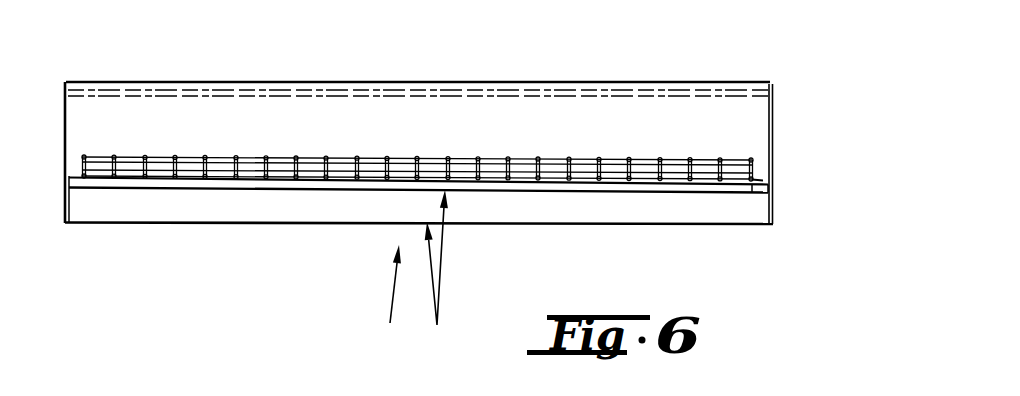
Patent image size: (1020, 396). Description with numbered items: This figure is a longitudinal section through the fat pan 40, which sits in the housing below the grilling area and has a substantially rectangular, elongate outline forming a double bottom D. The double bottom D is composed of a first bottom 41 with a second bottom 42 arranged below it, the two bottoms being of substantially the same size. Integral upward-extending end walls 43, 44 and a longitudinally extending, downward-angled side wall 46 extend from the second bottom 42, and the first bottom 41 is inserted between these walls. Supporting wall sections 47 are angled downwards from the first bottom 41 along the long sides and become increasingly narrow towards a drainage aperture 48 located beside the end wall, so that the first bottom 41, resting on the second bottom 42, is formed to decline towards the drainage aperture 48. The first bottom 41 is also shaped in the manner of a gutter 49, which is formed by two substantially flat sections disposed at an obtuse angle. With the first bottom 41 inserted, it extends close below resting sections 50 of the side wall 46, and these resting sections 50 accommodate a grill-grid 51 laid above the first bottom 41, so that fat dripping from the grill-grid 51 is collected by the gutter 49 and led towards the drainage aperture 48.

The fat pan 40 is at (390, 303).
The first bottom 41 is at (355, 188).
The second bottom 42 is at (501, 225).
The end wall 43 is at (773, 194).
The end wall 44 is at (65, 200).
The side wall 46 is at (738, 120).
The supporting wall section 47 is at (272, 203).
The drainage aperture 48 is at (755, 192).
The gutter 49 is at (540, 190).
The resting section 50 is at (762, 179).
The grill-grid 51 is at (523, 160).
The double bottom D is at (436, 275).